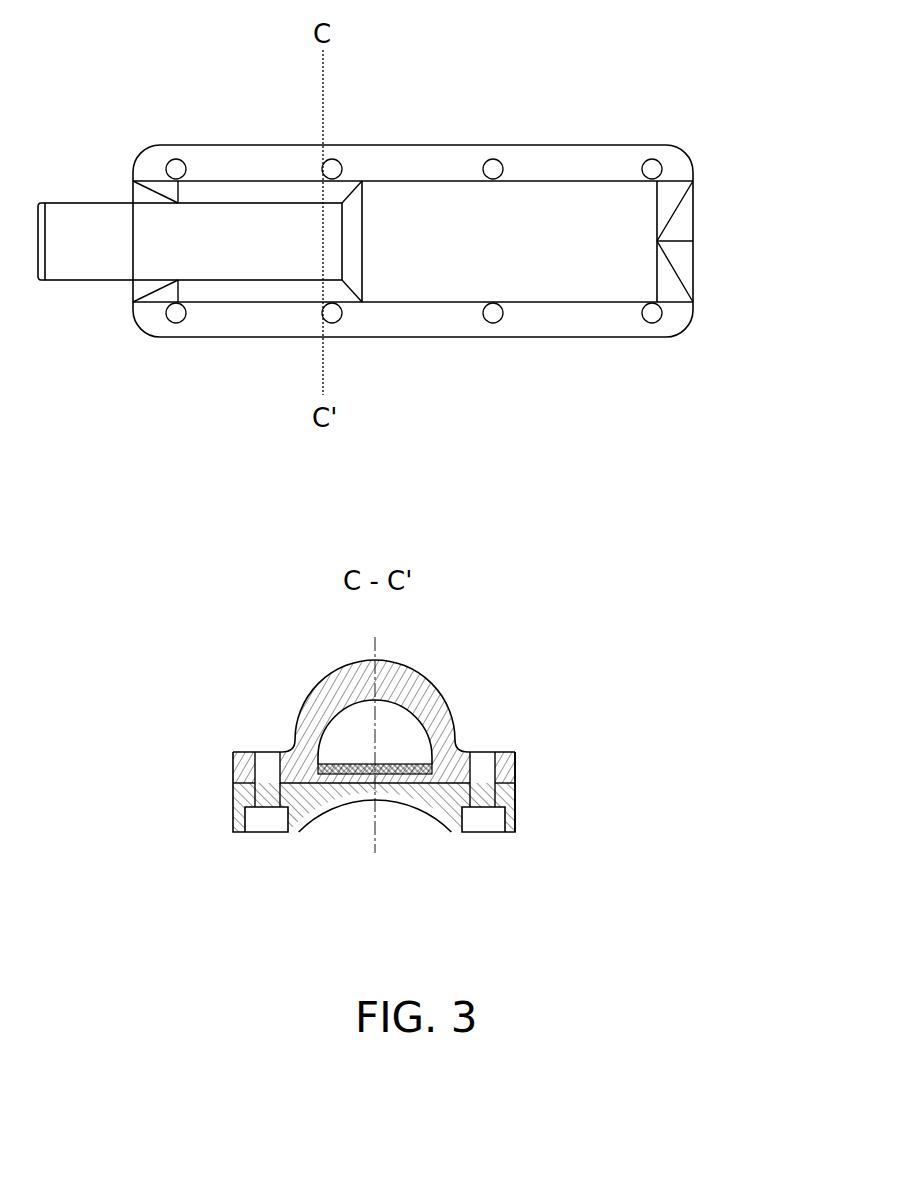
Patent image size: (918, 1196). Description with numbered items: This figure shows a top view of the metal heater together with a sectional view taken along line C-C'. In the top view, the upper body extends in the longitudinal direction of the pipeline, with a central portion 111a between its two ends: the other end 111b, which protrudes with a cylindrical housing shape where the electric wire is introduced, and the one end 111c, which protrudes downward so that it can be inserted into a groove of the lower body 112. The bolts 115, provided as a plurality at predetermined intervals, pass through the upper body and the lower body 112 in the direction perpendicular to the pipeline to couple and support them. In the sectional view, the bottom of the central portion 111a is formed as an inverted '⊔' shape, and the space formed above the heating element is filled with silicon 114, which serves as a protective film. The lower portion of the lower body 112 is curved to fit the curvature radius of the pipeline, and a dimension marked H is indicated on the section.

The central portion of the upper body 111a is at (528, 230).
The other end of the upper body 111b is at (232, 228).
The one end of the upper body 111c is at (680, 208).
The lower body 112 is at (405, 820).
The silicon 114 is at (353, 728).
The bolts 115 is at (651, 162).
The height H is at (515, 790).